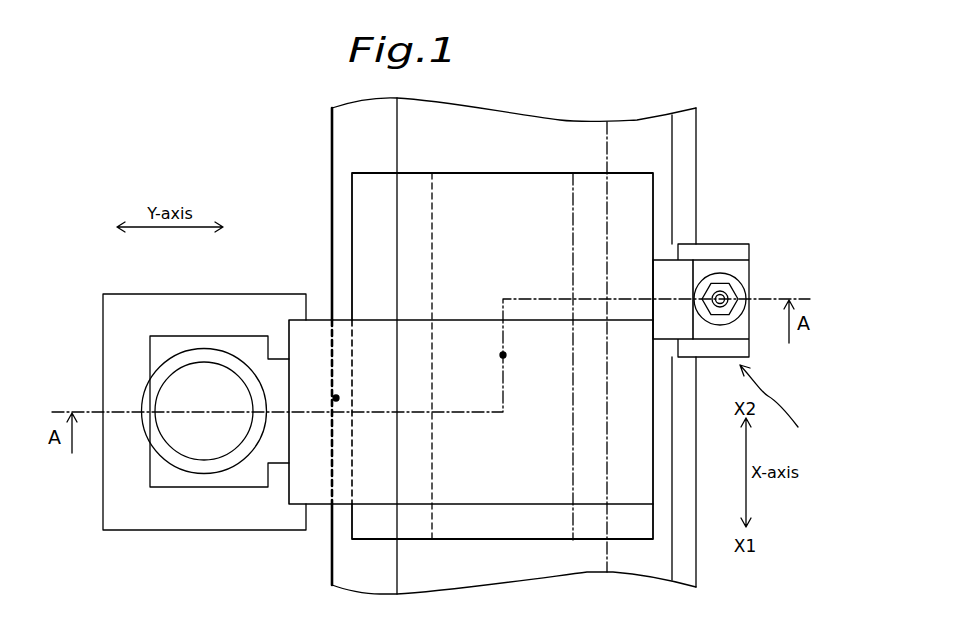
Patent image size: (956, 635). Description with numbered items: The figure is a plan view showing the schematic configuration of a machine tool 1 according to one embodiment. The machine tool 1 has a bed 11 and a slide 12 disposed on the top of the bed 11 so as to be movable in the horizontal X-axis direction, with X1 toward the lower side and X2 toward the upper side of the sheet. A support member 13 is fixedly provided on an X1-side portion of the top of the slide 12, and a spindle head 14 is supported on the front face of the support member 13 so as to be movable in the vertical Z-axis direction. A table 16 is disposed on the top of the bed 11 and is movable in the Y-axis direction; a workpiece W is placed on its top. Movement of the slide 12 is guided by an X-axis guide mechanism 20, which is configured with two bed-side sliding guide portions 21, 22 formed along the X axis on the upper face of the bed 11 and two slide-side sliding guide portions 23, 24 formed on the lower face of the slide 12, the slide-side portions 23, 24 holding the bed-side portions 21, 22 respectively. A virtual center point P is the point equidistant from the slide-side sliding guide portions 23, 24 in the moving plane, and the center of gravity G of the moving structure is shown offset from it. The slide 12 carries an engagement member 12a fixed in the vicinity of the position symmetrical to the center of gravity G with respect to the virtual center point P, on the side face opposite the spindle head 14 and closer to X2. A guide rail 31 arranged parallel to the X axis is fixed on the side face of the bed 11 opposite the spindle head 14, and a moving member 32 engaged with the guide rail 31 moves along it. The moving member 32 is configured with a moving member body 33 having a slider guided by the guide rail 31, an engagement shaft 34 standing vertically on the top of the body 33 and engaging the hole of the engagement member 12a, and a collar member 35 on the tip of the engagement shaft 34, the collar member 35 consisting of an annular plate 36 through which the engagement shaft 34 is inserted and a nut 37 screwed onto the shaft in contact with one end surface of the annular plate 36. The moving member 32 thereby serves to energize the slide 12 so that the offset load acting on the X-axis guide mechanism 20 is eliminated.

The machine tool 1 is at (153, 163).
The bed 11 is at (662, 139).
The slide 12 is at (359, 209).
The engagement member 12a is at (740, 270).
The support member 13 is at (643, 446).
The spindle head 14 is at (147, 393).
The table 16 is at (113, 300).
The X-axis guide mechanism 20 is at (510, 346).
The first bed-side sliding guide portion 21 is at (597, 145).
The second bed-side sliding guide portion 22 is at (405, 147).
The first slide-side sliding guide portion 23 is at (557, 533).
The second slide-side sliding guide portion 24 is at (443, 249).
The guide rail 31 is at (688, 160).
The moving member 32 is at (779, 404).
The moving member body 33 is at (743, 347).
The engagement shaft 34 is at (727, 303).
The collar member 35 is at (770, 268).
The annular plate 36 is at (738, 293).
The nut 37 is at (718, 285).
The center of gravity G is at (334, 396).
The virtual center point P is at (500, 353).
The workpiece W is at (157, 348).